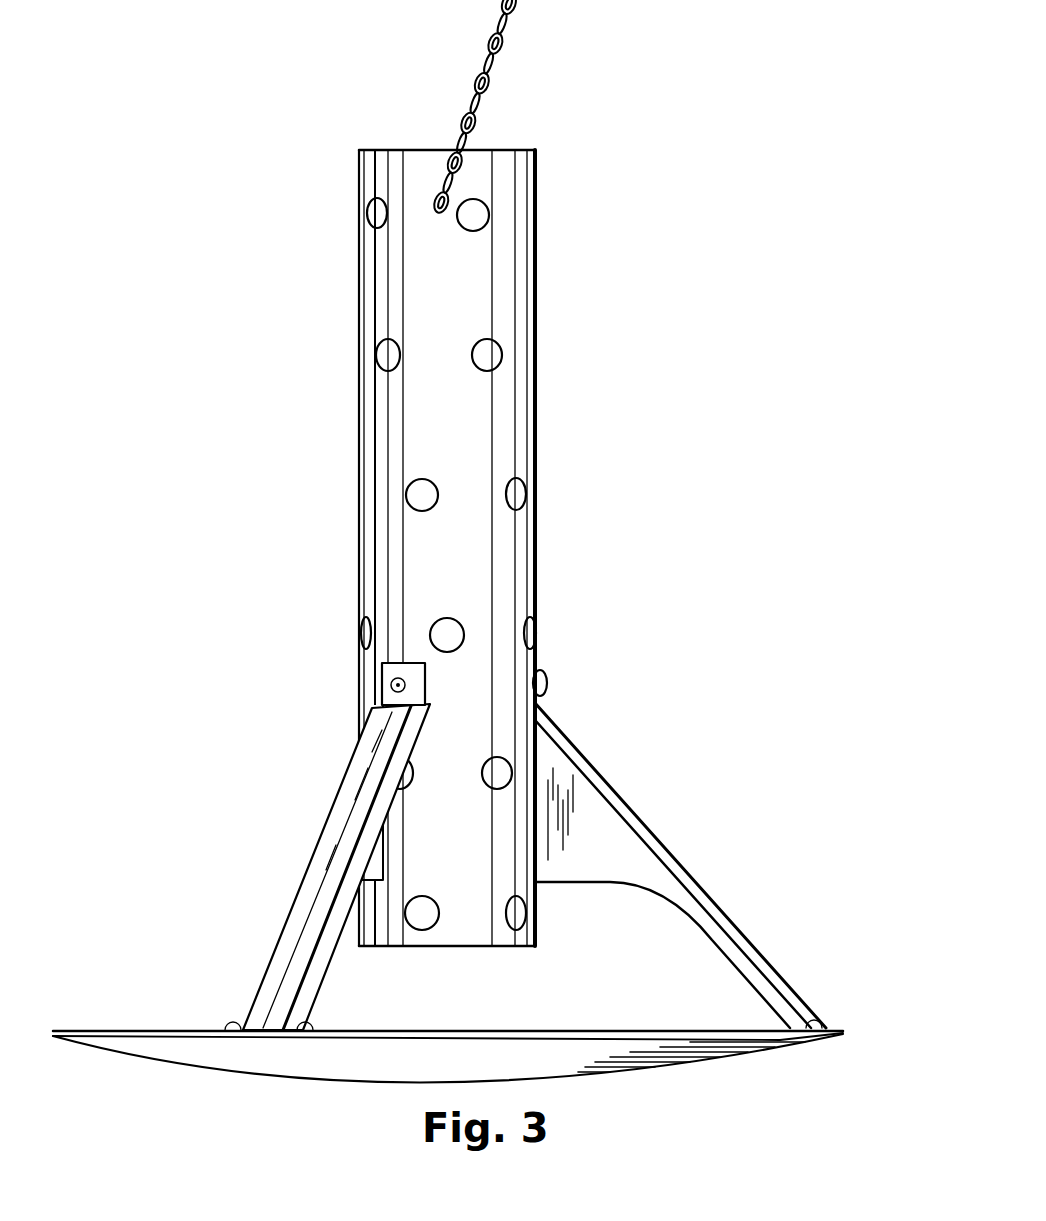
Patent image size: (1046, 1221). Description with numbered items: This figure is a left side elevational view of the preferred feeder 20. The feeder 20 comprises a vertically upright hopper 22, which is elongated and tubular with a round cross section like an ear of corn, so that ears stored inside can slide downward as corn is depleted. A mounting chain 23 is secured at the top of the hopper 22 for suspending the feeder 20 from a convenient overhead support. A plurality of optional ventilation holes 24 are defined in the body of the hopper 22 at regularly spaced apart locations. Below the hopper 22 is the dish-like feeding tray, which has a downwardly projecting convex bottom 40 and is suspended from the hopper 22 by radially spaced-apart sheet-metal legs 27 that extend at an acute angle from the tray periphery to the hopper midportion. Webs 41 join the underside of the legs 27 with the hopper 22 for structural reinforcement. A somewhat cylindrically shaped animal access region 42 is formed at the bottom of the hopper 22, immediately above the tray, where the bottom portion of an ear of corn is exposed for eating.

The feeder 20 is at (448, 567).
The hopper 22 is at (541, 406).
The mounting chain 23 is at (490, 87).
The ventilation holes 24 is at (370, 210).
The sheet-metal legs 27 is at (750, 940).
The convex bottom 40 is at (578, 1048).
The webs 41 is at (590, 812).
The animal access region 42 is at (528, 991).